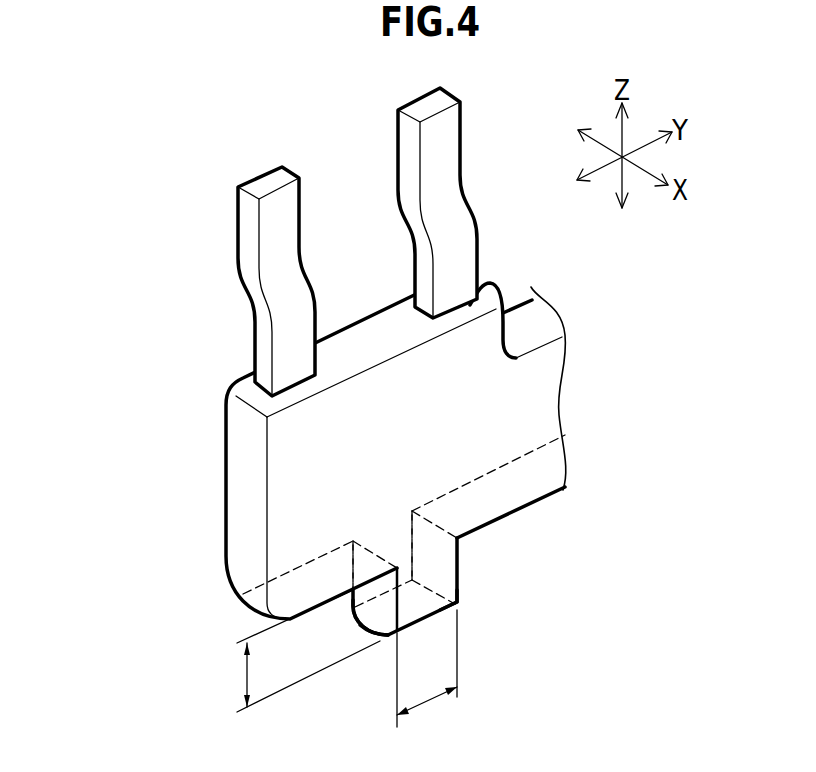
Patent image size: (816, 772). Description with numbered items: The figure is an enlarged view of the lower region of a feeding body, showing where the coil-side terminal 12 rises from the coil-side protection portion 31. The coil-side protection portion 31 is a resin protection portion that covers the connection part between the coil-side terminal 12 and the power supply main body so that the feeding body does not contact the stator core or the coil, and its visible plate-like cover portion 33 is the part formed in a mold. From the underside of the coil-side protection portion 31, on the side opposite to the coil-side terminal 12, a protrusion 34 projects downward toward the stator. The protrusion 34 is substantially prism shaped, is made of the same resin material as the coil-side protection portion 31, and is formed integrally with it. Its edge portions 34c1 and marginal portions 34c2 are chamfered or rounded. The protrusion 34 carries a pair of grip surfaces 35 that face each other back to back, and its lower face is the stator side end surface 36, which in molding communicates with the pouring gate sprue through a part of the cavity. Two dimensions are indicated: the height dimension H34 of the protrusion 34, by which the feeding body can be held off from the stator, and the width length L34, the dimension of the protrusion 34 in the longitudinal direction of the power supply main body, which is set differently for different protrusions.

The coil-side terminal 12 is at (420, 106).
The coil-side protection portion 31 is at (356, 513).
The cover portion 33 is at (243, 495).
The protrusion 34 is at (442, 584).
The edge portion 34c1 is at (458, 600).
The marginal portion 34c2 is at (419, 625).
The grip surface 35 is at (373, 593).
The stator side end surface 36 is at (389, 617).
The height dimension H34 is at (246, 679).
The width length L34 is at (428, 701).